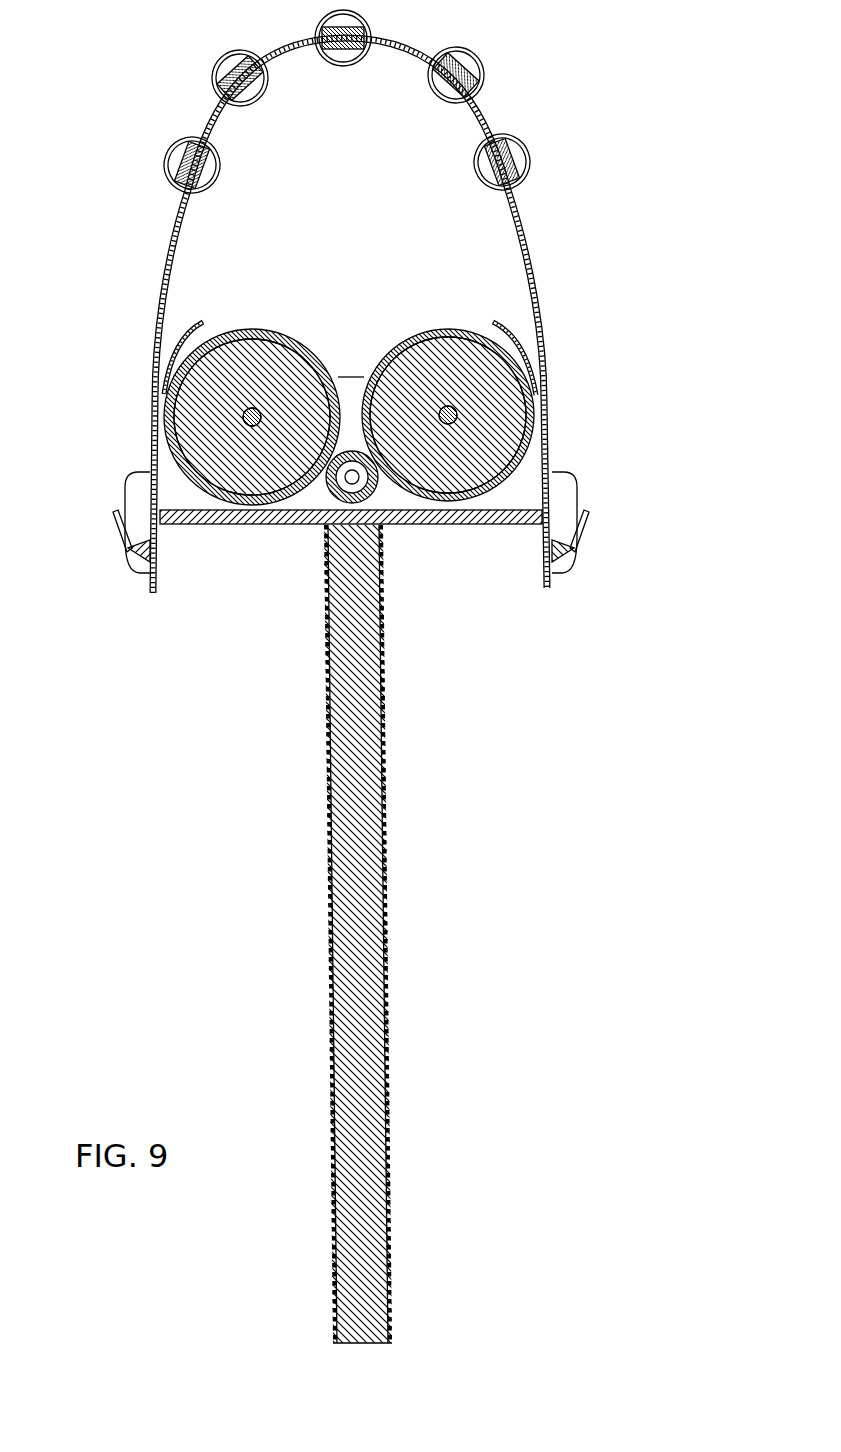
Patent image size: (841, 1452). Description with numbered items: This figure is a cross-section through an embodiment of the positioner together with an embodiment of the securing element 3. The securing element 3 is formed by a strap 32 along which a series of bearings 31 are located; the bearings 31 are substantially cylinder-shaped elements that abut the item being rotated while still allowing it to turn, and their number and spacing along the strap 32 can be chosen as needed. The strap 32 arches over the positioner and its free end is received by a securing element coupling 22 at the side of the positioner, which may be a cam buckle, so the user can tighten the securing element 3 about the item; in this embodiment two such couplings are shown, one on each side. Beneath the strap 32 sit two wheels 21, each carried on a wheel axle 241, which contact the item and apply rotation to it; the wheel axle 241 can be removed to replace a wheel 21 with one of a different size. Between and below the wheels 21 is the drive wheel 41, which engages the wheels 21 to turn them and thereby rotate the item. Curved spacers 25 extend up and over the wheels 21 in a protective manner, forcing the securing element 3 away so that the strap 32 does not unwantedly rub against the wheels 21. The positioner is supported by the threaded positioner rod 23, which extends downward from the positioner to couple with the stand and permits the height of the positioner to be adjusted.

The securing element 3 is at (537, 92).
The bearings 31 is at (222, 86).
The strap 32 is at (523, 222).
The spacers 25 is at (522, 340).
The wheels 21 is at (500, 412).
The wheel axle 241 is at (252, 417).
The securing element coupling 22 is at (578, 497).
The drive wheel 41 is at (362, 488).
The positioner rod 23 is at (385, 730).